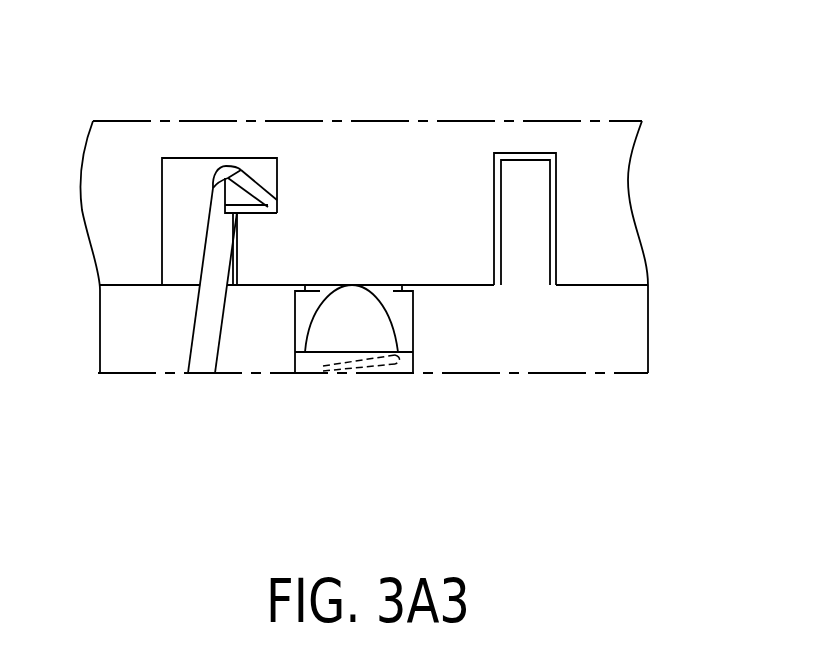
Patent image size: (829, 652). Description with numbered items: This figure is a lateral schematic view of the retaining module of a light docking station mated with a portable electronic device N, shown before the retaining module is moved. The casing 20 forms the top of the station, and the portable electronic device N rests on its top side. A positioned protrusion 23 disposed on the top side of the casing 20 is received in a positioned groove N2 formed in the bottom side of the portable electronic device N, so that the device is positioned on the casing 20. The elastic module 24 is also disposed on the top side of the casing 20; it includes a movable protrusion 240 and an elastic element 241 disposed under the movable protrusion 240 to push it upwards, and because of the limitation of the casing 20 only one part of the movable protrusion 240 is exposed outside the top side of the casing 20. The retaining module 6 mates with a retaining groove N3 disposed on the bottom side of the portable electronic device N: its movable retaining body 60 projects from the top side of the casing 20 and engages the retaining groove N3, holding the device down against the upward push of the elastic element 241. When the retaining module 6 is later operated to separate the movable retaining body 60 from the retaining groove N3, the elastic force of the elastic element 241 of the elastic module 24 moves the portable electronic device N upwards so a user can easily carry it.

The casing 20 is at (562, 323).
The positioned protrusion 23 is at (535, 173).
The elastic module 24 is at (356, 399).
The movable protrusion 240 is at (327, 332).
The elastic element 241 is at (400, 365).
The retaining module 6 is at (156, 269).
The movable retaining body 60 is at (222, 252).
The portable electronic device N is at (367, 148).
The positioned groove N2 is at (498, 155).
The retaining groove N3 is at (186, 172).